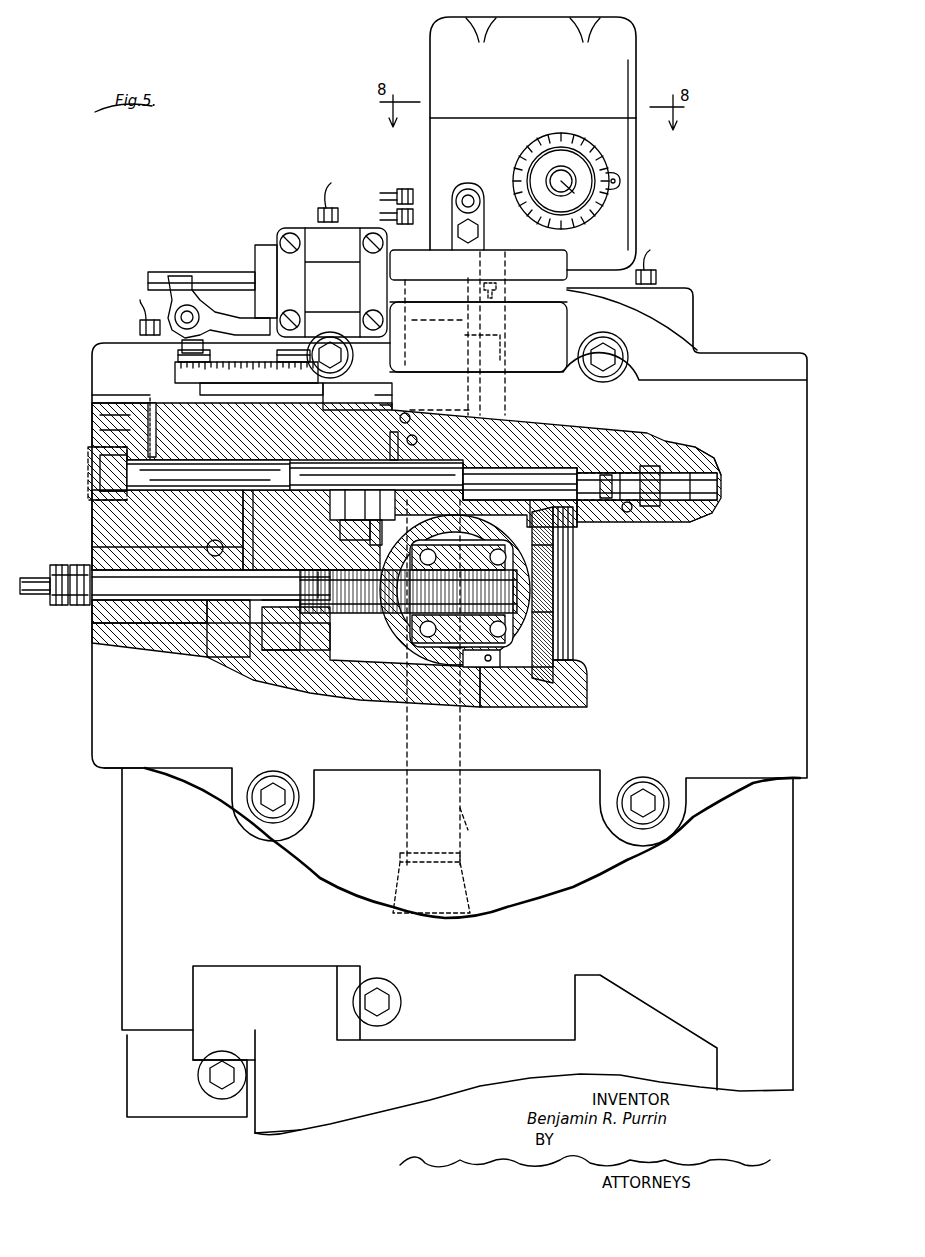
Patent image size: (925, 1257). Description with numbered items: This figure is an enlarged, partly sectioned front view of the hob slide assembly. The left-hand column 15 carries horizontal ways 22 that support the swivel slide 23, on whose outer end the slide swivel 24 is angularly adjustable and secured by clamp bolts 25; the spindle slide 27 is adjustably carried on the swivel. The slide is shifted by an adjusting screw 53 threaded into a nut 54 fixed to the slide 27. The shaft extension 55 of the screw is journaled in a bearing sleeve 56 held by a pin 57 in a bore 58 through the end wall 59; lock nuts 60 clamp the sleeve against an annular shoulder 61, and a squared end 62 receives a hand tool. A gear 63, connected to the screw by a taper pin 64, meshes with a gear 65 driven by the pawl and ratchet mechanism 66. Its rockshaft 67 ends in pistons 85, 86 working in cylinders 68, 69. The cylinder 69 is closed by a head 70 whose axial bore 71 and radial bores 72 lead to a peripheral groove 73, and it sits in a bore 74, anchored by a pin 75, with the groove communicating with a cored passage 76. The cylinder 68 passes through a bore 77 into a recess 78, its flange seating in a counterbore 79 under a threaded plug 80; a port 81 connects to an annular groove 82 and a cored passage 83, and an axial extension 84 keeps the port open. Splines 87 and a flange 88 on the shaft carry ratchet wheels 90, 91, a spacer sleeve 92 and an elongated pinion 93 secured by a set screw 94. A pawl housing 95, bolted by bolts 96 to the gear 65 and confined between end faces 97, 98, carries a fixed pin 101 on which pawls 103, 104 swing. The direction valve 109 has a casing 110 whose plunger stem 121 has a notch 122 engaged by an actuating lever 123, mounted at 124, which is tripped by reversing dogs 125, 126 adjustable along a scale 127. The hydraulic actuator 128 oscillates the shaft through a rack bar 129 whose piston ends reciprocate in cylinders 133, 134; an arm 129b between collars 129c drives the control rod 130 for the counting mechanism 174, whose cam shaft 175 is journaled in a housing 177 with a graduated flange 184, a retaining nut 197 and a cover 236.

The left-hand column 15 is at (310, 1118).
The ways 22 is at (660, 1027).
The swivel slide 23 is at (130, 912).
The slide swivel 24 is at (110, 748).
The clamp bolts 25 is at (652, 797).
The spindle slide 27 is at (346, 396).
The adjusting screw 53 is at (362, 613).
The nut 54 is at (432, 660).
The shaft extension 55 is at (180, 620).
The bearing sleeve 56 is at (140, 650).
The pin 57 is at (105, 538).
The bore 58 is at (216, 655).
The end wall 59 is at (105, 522).
The lock nuts 60 is at (63, 607).
The annular shoulder 61 is at (246, 578).
The squared end 62 is at (36, 596).
The gear 63 is at (296, 645).
The taper pin 64 is at (272, 652).
The gear 65 is at (246, 463).
The pawl and ratchet mechanism 66 is at (400, 406).
The rockshaft 67 is at (535, 432).
The cylinder 68 is at (100, 429).
The cylinder 69 is at (610, 462).
The head 70 is at (652, 450).
The axial bore 71 is at (612, 500).
The radial bores 72 is at (662, 522).
The peripheral groove 73 is at (640, 512).
The bore 74 is at (540, 446).
The pin 75 is at (628, 513).
The cored passage 76 is at (650, 452).
The bore 77 is at (106, 395).
The recess 78 is at (330, 676).
The counterbore 79 is at (102, 493).
The threaded plug 80 is at (98, 470).
The port 81 is at (100, 415).
The annular groove 82 is at (106, 505).
The cored passage 83 is at (106, 407).
The axial extension 84 is at (96, 447).
The piston 85 is at (207, 496).
The piston 86 is at (578, 456).
The splines 87 is at (352, 540).
The peripheral flange 88 is at (282, 474).
The ratchet wheel 90 is at (280, 372).
The ratchet wheel 91 is at (413, 434).
The spacer sleeve 92 is at (330, 536).
The elongated pinion 93 is at (470, 432).
The set screw 94 is at (466, 480).
The pawl housing 95 is at (378, 545).
The bolts 96 is at (245, 511).
The end face 97 is at (180, 406).
The end face 98 is at (406, 412).
The fixed pin 101 is at (378, 395).
The pawl 103 is at (302, 376).
The pawl 104 is at (384, 405).
The direction valve 109 is at (322, 230).
The casing 110 is at (268, 240).
The actuating stem 121 is at (232, 272).
The notch 122 is at (186, 276).
The actuating lever 123 is at (182, 296).
The lever mounting 124 is at (182, 316).
The reversing dog 125 is at (148, 327).
The reversing dog 126 is at (254, 362).
The scale 127 is at (280, 362).
The hydraulic actuator 128 is at (458, 806).
The rack bar 129 is at (462, 748).
The arm 129b is at (452, 666).
The collars 129c is at (542, 700).
The control rod 130 is at (504, 354).
The cylinder 133 is at (470, 350).
The cylinder 134 is at (398, 855).
The counting mechanism 174 is at (633, 54).
The cam shaft 175 is at (572, 192).
The housing 177 is at (626, 147).
The peripheral flange 184 is at (598, 163).
The nut 197 is at (586, 207).
The cover 236 is at (628, 72).